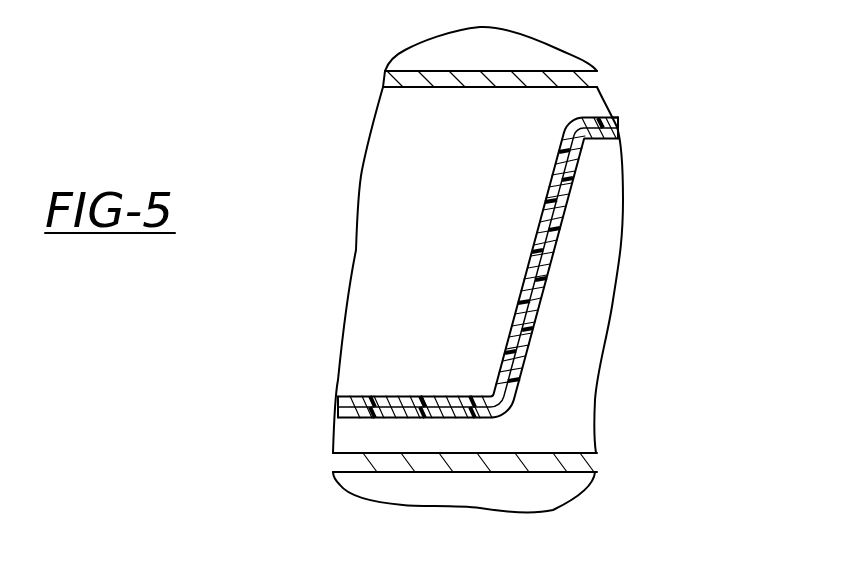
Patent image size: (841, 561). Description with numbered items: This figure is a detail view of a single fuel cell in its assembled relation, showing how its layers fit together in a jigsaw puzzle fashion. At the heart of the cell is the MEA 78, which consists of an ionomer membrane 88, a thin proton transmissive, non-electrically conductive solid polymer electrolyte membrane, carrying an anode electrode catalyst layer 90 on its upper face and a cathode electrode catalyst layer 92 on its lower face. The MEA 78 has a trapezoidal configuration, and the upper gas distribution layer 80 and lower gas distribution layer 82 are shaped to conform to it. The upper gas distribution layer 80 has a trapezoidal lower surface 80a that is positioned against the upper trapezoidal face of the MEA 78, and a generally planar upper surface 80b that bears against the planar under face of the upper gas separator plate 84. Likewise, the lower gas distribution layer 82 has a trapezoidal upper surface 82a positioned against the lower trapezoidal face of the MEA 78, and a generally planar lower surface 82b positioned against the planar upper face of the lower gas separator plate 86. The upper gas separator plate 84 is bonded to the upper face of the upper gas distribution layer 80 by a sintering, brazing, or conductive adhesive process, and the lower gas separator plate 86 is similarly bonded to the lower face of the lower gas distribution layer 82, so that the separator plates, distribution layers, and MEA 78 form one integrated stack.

The MEA 78 is at (330, 401).
The upper gas distribution layer 80 is at (393, 243).
The trapezoidal lower surface 80a is at (598, 127).
The planar upper surface 80b is at (508, 87).
The lower gas distribution layer 82 is at (348, 437).
The trapezoidal upper surface 82a is at (548, 258).
The planar lower surface 82b is at (590, 462).
The upper gas separator plate 84 is at (400, 78).
The lower gas separator plate 86 is at (350, 460).
The ionomer membrane 88 is at (618, 130).
The anode electrode catalyst layer 90 is at (618, 122).
The cathode electrode catalyst layer 92 is at (622, 183).